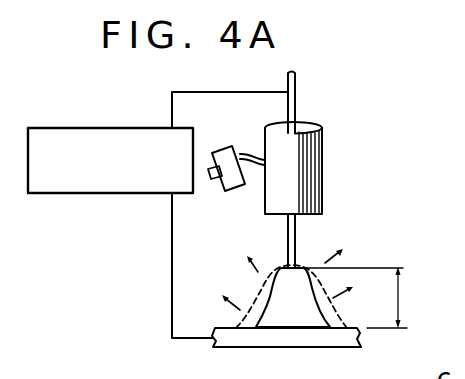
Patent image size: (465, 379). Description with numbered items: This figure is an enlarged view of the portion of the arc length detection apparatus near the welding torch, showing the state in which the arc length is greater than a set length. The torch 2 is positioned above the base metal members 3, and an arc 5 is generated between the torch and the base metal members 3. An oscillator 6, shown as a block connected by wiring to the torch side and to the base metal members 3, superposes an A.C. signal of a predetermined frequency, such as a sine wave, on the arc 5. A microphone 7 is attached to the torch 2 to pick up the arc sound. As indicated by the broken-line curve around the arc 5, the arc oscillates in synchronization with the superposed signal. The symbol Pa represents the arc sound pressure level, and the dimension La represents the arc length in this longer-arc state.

The oscillator 6 is at (70, 128).
The torch 2 is at (322, 167).
The microphone 7 is at (215, 143).
The arc 5 is at (281, 313).
The base metal members 3 is at (295, 343).
The arc sound pressure level Pa is at (287, 278).
The arc length La is at (366, 297).